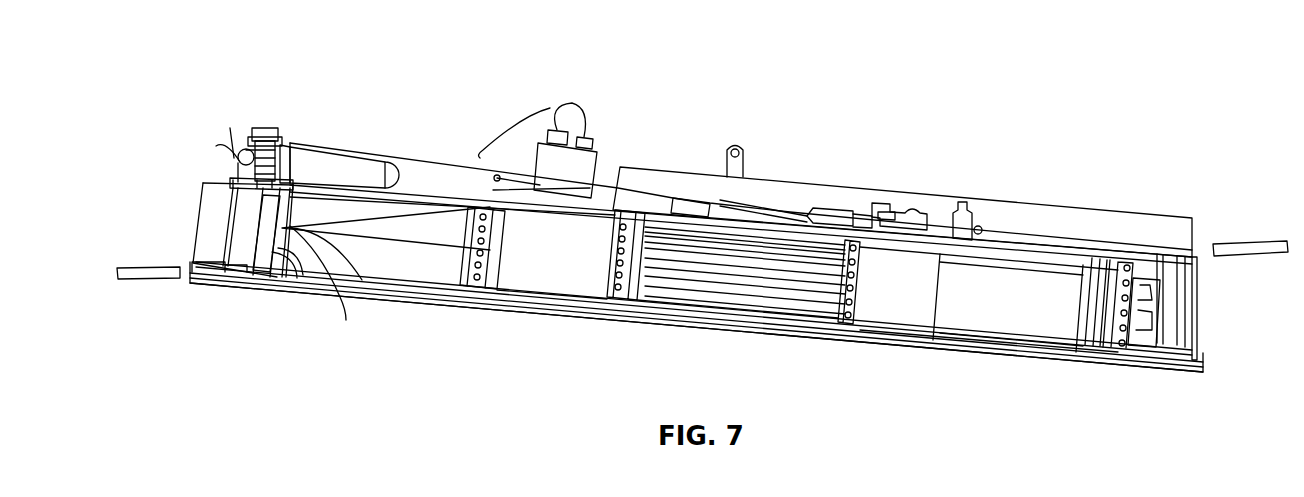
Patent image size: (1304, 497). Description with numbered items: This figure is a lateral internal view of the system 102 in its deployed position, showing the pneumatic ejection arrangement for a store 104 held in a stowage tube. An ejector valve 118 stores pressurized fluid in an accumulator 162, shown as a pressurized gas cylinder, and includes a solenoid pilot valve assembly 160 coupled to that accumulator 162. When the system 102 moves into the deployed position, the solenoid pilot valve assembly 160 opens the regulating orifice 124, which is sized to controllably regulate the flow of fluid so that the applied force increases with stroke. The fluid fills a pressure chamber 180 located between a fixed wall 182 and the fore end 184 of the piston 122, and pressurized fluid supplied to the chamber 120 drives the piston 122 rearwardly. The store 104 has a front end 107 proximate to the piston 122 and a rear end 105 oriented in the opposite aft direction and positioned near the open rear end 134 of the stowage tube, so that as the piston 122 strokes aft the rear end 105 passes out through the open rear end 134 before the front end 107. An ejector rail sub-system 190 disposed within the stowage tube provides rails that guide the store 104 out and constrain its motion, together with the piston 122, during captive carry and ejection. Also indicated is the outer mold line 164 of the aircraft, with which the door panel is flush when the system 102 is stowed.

The system 102 is at (166, 126).
The store 104 is at (1001, 294).
The rear end 105 is at (1150, 350).
The front end 107 is at (362, 280).
The ejector valve 118 is at (362, 148).
The chamber 120 is at (428, 264).
The piston 122 is at (346, 320).
The regulating orifice 124 is at (258, 187).
The open rear end 134 is at (1205, 322).
The solenoid pilot valve assembly 160 is at (264, 127).
The accumulator 162 is at (378, 152).
The outer mold line 164 is at (132, 282).
The pressure chamber 180 is at (253, 246).
The fixed wall 182 is at (233, 227).
The fore end 184 is at (303, 275).
The ejector rail sub-system 190 is at (927, 208).